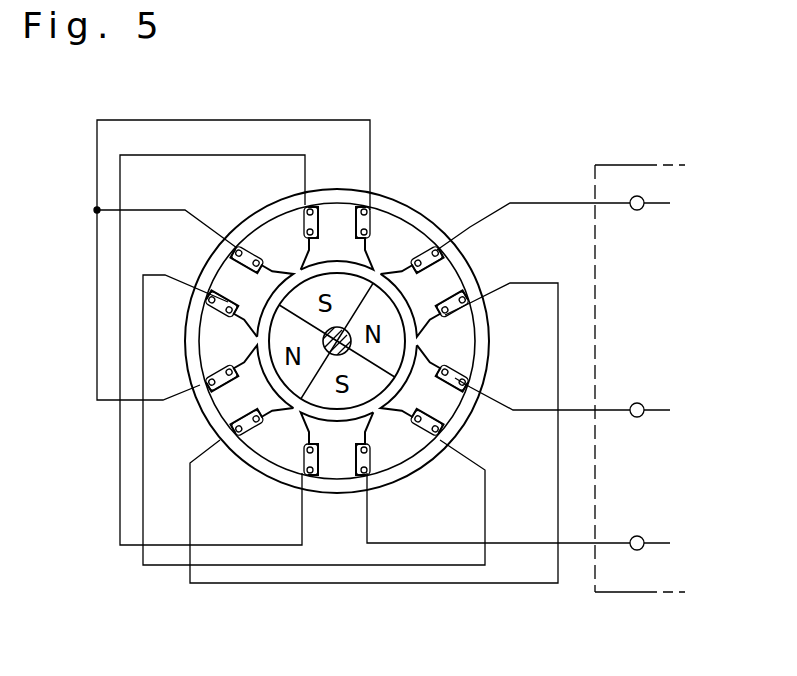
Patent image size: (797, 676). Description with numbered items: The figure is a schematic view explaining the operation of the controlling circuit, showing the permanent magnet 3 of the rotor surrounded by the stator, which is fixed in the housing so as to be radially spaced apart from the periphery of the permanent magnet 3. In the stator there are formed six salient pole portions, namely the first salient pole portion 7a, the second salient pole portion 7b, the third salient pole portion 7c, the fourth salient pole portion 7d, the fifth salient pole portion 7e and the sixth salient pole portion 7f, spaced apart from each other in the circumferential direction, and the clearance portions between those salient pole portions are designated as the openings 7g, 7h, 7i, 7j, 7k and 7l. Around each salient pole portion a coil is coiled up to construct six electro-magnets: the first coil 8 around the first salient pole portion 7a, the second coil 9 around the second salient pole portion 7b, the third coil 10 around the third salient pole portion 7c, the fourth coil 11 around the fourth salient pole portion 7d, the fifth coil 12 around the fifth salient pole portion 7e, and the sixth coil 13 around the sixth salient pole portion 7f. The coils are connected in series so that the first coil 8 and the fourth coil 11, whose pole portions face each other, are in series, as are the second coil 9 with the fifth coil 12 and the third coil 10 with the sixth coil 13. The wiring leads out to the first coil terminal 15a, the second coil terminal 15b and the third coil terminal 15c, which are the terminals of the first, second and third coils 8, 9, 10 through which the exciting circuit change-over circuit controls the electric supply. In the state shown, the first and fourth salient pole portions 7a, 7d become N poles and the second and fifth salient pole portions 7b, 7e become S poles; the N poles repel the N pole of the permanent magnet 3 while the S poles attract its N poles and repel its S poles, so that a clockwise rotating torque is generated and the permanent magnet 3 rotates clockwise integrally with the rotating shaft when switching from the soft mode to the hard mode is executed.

The permanent magnet 3 is at (377, 252).
The first salient pole portion 7a is at (458, 332).
The second salient pole portion 7b is at (407, 440).
The third salient pole portion 7c is at (283, 475).
The fourth salient pole portion 7d is at (243, 352).
The fifth salient pole portion 7e is at (242, 245).
The sixth salient pole portion 7f is at (323, 255).
The opening 7g is at (430, 345).
The opening 7h is at (385, 445).
The opening 7i is at (285, 445).
The opening 7j is at (243, 342).
The opening 7k is at (290, 242).
The opening 7l is at (412, 248).
The first coil 8 is at (448, 272).
The second coil 9 is at (450, 412).
The third coil 10 is at (337, 462).
The fourth coil 11 is at (207, 423).
The fifth coil 12 is at (208, 272).
The sixth coil 13 is at (348, 255).
The first coil terminal 15a is at (634, 211).
The second coil terminal 15b is at (639, 417).
The third coil terminal 15c is at (639, 536).